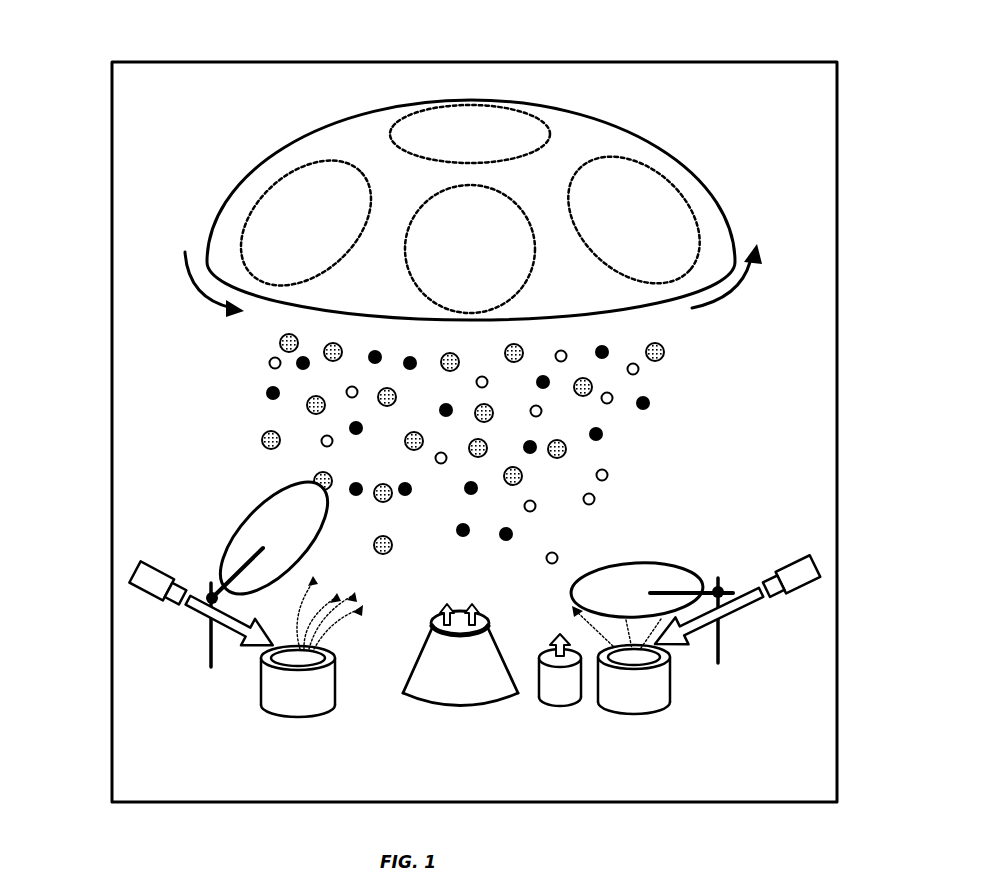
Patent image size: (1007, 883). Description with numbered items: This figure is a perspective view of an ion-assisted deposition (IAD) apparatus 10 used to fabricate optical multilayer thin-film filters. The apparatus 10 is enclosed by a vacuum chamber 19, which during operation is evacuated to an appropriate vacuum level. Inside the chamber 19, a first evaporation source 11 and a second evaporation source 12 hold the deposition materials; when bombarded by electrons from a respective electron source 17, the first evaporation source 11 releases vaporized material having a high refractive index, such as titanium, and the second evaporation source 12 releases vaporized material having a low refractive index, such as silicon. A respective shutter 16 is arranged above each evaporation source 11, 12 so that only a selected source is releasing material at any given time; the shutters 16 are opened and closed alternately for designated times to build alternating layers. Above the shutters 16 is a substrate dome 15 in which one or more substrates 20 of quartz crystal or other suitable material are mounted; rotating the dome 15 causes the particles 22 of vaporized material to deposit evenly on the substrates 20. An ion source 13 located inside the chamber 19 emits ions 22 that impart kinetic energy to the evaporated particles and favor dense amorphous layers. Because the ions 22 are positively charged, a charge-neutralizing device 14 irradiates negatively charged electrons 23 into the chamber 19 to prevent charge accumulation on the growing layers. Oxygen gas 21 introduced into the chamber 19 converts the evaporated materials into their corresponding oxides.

The IAD apparatus 10 is at (143, 40).
The first evaporation source 11 is at (273, 660).
The second evaporation source 12 is at (666, 675).
The ion source 13 is at (475, 675).
The charge-neutralizing device 14 is at (597, 692).
The substrate dome 15 is at (482, 210).
The shutter 16 is at (454, 565).
The electron source 17 is at (472, 591).
The vacuum chamber 19 is at (428, 432).
The substrate 20 is at (471, 197).
The oxygen gas 21 is at (663, 357).
The ions 22 is at (649, 406).
The electrons 23 is at (607, 478).